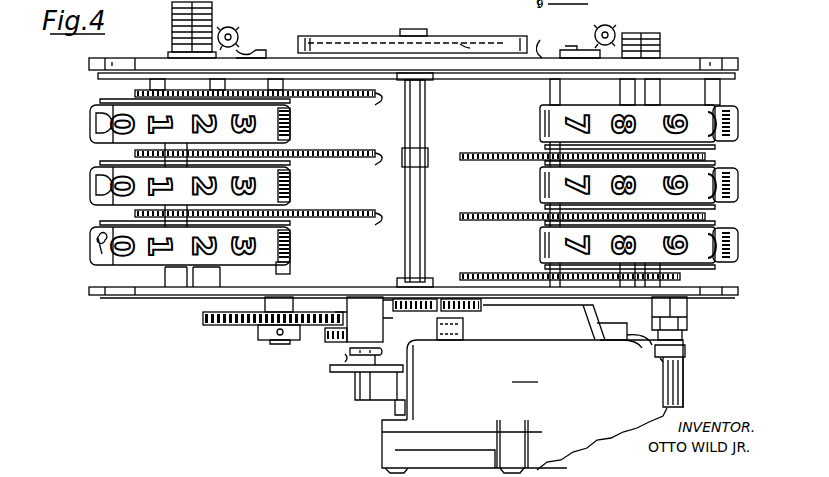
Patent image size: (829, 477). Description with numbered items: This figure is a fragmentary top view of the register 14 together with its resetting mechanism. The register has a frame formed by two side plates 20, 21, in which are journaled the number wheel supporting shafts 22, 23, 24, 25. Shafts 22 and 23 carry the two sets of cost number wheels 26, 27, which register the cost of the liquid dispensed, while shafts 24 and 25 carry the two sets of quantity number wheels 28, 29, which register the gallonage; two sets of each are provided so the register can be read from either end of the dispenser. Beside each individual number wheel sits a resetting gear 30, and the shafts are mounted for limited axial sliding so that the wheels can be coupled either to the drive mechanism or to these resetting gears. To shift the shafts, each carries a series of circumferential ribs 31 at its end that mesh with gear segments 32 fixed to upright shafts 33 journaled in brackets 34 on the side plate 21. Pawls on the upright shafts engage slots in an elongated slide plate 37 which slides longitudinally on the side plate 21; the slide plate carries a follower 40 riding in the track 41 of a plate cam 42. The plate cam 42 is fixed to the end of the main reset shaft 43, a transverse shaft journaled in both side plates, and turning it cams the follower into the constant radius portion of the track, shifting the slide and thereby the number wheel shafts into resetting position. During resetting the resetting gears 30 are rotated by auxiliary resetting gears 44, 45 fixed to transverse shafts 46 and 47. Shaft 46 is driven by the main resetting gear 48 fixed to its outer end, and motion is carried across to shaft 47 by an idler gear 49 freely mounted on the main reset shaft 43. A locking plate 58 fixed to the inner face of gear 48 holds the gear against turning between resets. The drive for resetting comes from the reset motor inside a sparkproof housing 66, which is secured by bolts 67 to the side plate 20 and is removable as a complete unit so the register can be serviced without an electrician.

The register 14 is at (98, 296).
The side plate 20 is at (122, 296).
The side plate 21 is at (162, 58).
The number wheel supporting shaft 22 is at (620, 100).
The number wheel supporting shaft 23 is at (225, 80).
The number wheel supporting shaft 24 is at (660, 94).
The number wheel supporting shaft 25 is at (152, 84).
The set of number wheels 26 is at (545, 126).
The set of number wheels 27 is at (290, 122).
The set of number wheels 28 is at (738, 124).
The set of number wheels 29 is at (90, 124).
The resetting gear 30 is at (135, 94).
The circumferential rib 31 is at (660, 36).
The gear segment 32 is at (214, 4).
The upright shaft 33 is at (238, 33).
The bracket 34 is at (252, 52).
The slide plate 37 is at (540, 40).
The follower 40 is at (466, 44).
The track 41 is at (446, 42).
The plate cam 42 is at (364, 36).
The main reset shaft 43 is at (418, 108).
The auxiliary resetting gear 44 is at (369, 166).
The auxiliary resetting gear 45 is at (492, 154).
The transverse rotatable shaft 46 is at (290, 266).
The transverse rotatable shaft 47 is at (550, 98).
The main resetting gear 48 is at (204, 322).
The idler gear 49 is at (428, 165).
The locking plate 58 is at (210, 315).
The housing 66 is at (508, 385).
The bolt 67 is at (346, 360).